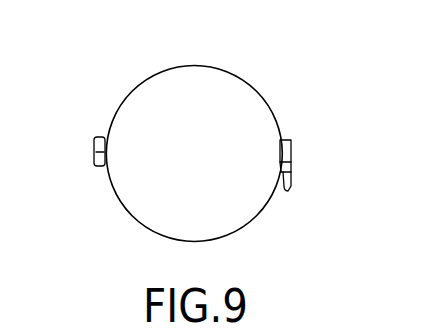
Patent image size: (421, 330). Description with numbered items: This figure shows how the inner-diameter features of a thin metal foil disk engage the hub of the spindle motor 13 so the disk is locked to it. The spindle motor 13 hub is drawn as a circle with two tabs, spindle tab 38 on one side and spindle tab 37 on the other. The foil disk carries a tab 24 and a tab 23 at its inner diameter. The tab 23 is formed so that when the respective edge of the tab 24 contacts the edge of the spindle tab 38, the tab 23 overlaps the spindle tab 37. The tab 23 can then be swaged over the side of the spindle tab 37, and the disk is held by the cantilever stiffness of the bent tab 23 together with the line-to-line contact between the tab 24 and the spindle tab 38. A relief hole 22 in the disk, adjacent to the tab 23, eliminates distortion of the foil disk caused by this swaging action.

The spindle motor 13 is at (220, 85).
The tab 24 is at (105, 138).
The spindle tab 38 is at (100, 153).
The spindle tab 37 is at (285, 153).
The tab 23 is at (281, 176).
The relief hole 22 is at (286, 191).